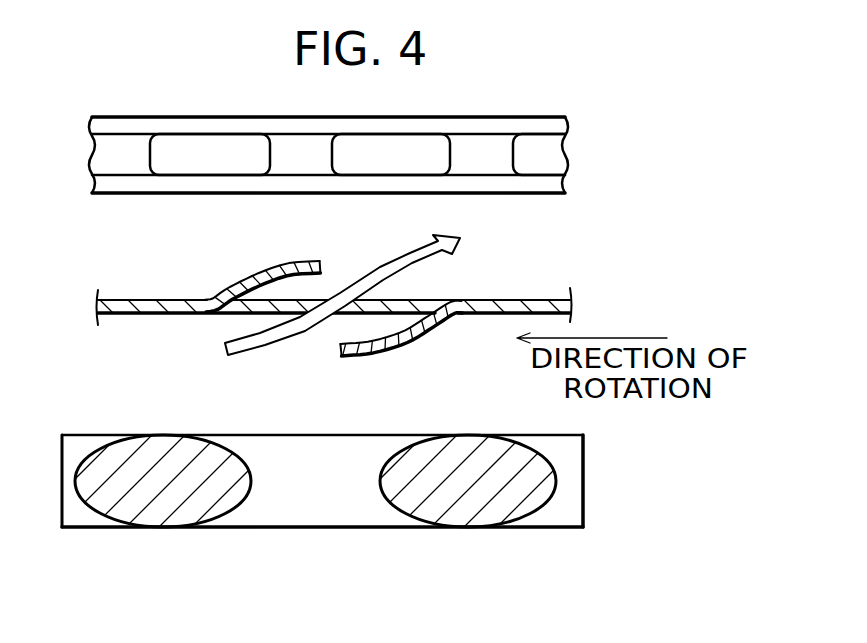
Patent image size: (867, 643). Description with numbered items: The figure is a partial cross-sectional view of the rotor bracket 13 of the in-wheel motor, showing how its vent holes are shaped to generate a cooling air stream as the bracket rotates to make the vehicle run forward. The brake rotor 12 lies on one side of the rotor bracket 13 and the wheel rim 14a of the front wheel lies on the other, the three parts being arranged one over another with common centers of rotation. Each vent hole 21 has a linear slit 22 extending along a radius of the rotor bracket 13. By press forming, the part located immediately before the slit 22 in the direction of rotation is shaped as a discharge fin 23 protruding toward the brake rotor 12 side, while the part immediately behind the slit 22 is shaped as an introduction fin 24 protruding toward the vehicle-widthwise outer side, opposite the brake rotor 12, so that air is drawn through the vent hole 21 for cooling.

The brake rotor 12 is at (543, 150).
The rotor bracket 13 is at (560, 303).
The wheel rim 14a is at (565, 472).
The vent hole 21 is at (320, 332).
The slit 22 is at (323, 265).
The discharge fin 23 is at (270, 272).
The introduction fin 24 is at (395, 343).